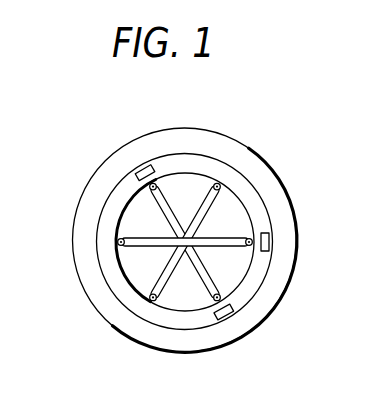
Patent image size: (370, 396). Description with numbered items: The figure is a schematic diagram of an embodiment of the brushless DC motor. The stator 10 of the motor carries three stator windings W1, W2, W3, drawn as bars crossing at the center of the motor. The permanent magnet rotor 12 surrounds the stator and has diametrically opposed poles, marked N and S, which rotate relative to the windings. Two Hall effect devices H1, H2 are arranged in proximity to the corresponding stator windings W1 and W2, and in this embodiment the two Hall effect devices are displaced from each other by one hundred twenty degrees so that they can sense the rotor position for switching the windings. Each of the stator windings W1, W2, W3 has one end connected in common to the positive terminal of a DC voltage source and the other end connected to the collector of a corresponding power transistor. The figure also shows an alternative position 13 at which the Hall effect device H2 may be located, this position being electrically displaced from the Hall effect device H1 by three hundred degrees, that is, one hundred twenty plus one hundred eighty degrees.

The stator 10 is at (190, 296).
The permanent magnet rotor 12 is at (82, 217).
The alternative location for Hall effect device H2 13 is at (232, 313).
The Hall effect device H1 is at (272, 240).
The Hall effect device H2 is at (140, 163).
The stator winding W1 is at (237, 257).
The stator winding W2 is at (173, 180).
The stator winding W3 is at (133, 288).